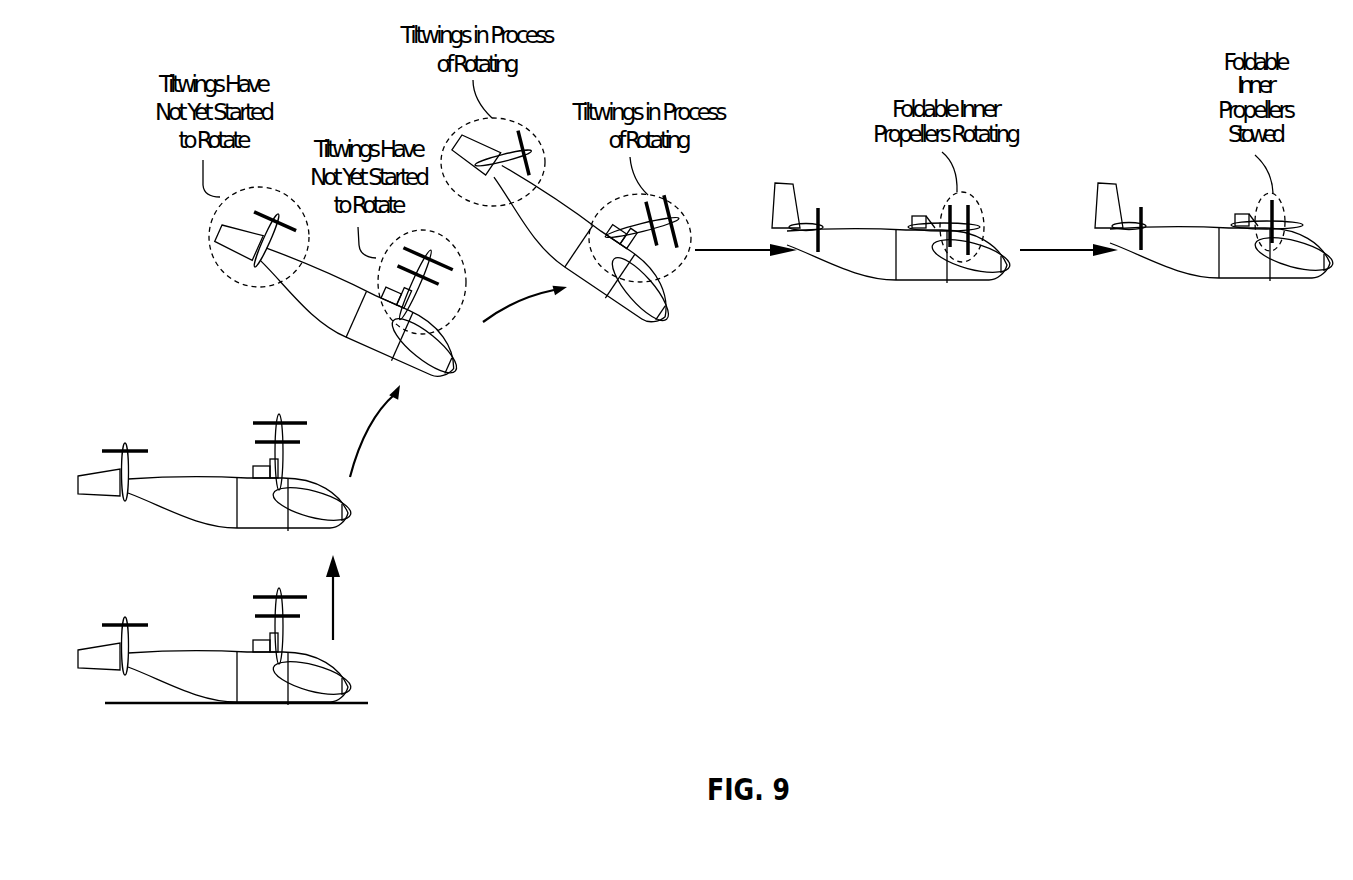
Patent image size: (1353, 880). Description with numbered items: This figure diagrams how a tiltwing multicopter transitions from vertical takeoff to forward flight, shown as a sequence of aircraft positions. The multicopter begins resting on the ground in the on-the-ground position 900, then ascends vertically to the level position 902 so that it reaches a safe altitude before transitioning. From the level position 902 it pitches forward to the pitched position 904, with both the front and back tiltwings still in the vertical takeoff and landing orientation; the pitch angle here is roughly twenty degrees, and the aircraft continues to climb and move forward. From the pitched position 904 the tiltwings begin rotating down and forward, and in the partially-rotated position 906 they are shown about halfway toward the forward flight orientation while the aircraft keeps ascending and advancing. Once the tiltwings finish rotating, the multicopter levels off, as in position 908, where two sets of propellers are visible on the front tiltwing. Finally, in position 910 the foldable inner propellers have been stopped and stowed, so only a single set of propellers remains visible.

The on-the-ground position 900 is at (352, 690).
The level position 902 is at (352, 516).
The pitched position 904 is at (456, 374).
The partially-rotated position 906 is at (667, 322).
The level forward flight position 908 is at (920, 280).
The stowed-propeller position 910 is at (1250, 277).